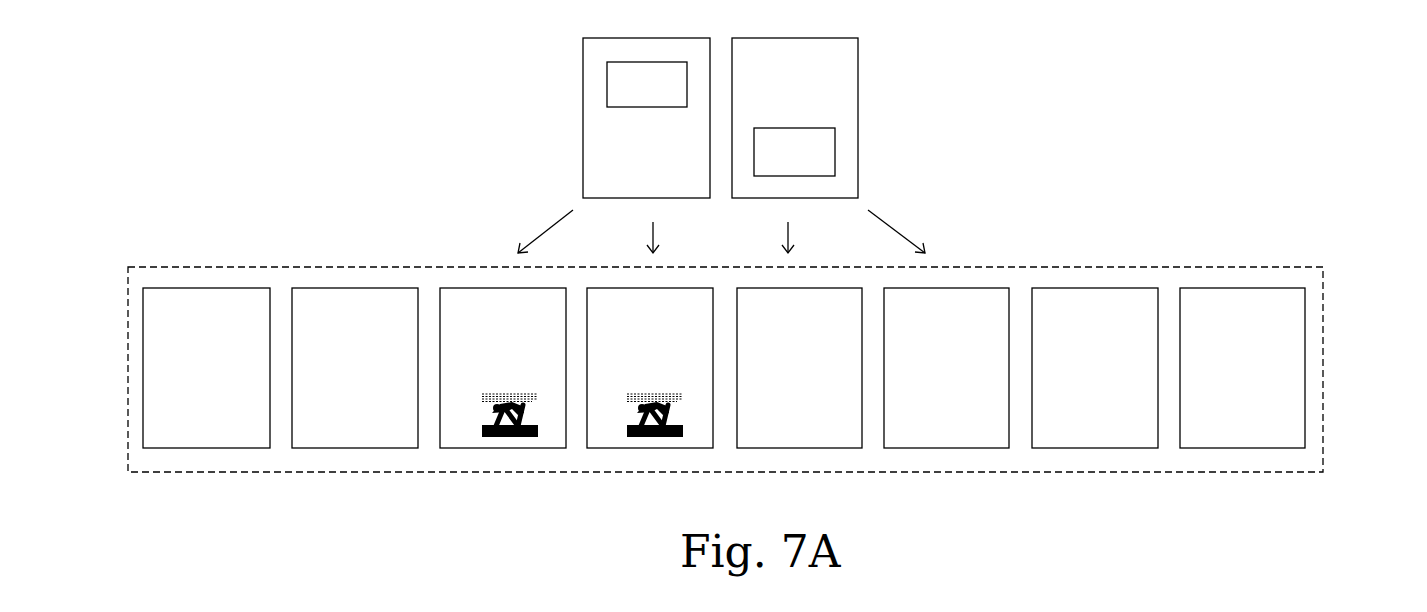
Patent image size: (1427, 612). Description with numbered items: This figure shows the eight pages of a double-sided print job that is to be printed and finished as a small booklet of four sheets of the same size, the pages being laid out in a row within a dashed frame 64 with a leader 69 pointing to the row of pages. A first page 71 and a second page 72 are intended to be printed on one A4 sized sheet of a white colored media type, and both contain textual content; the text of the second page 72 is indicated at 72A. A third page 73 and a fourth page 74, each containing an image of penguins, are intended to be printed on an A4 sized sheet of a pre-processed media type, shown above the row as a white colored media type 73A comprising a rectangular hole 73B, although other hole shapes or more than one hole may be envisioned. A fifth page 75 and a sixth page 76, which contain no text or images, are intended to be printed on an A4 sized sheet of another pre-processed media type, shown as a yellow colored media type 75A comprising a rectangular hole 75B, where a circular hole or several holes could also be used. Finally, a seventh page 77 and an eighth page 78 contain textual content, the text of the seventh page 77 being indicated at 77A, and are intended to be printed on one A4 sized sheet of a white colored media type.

The display region / timeline frame 64 is at (1323, 388).
The row of content items 69 is at (868, 472).
The first page 71 is at (187, 449).
The second page 72 is at (355, 363).
The text element TEXT 3 72A is at (355, 312).
The third page 73 is at (495, 449).
The white colored media type 73A is at (583, 132).
The hole 73B is at (634, 73).
The fourth page 74 is at (643, 449).
The fifth page 75 is at (800, 449).
The yellow colored media type 75A is at (858, 122).
The hole 75B is at (812, 157).
The sixth page 76 is at (950, 449).
The seventh page 77 is at (1095, 355).
The text element TEXT 4 77A is at (1090, 392).
The eighth page 78 is at (1263, 449).